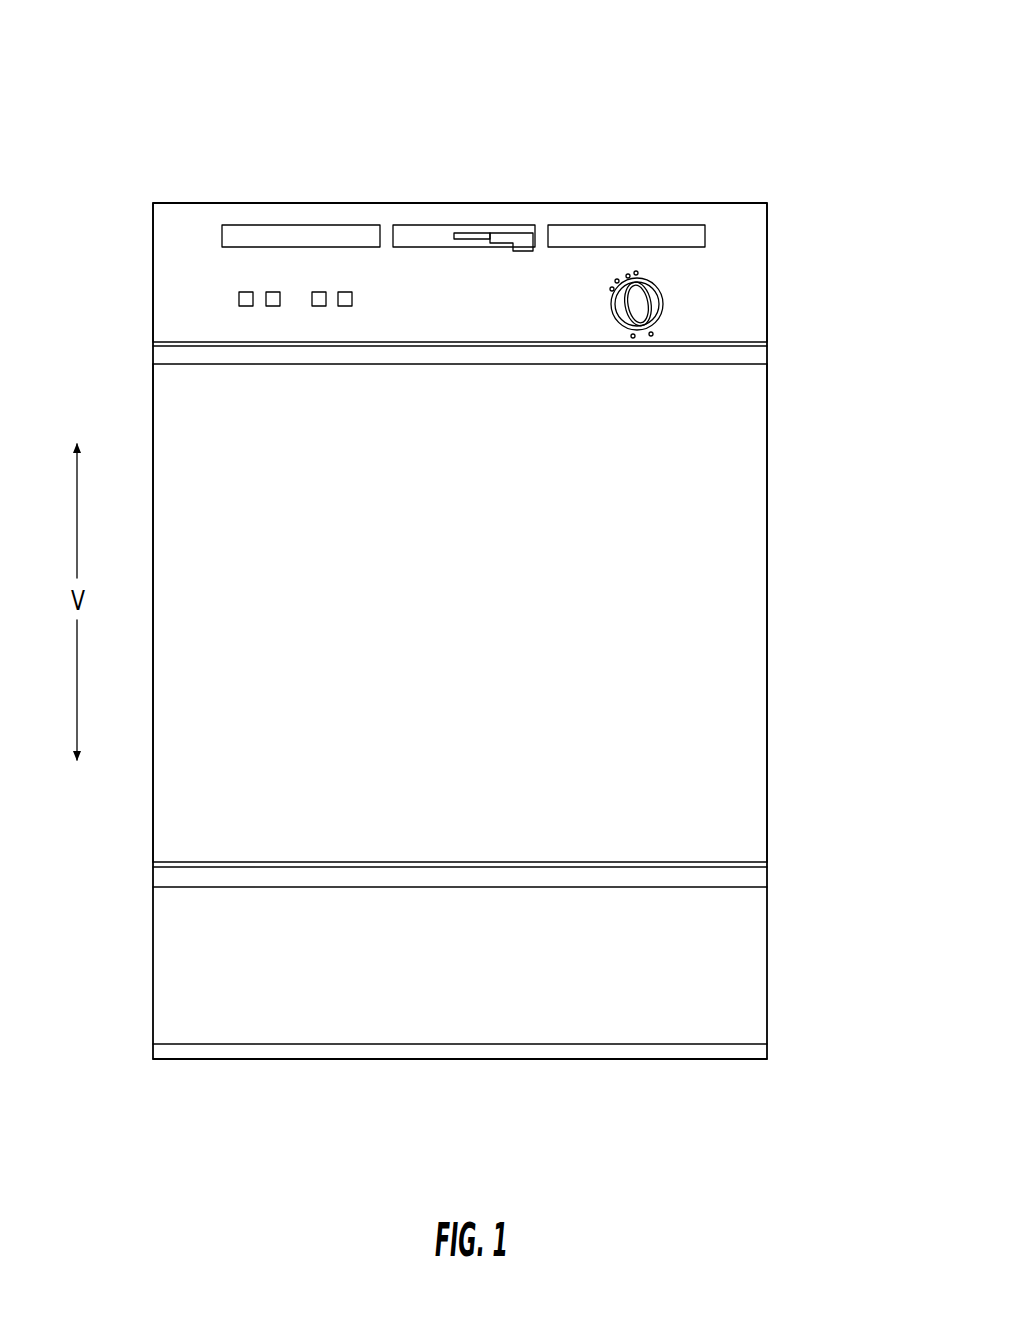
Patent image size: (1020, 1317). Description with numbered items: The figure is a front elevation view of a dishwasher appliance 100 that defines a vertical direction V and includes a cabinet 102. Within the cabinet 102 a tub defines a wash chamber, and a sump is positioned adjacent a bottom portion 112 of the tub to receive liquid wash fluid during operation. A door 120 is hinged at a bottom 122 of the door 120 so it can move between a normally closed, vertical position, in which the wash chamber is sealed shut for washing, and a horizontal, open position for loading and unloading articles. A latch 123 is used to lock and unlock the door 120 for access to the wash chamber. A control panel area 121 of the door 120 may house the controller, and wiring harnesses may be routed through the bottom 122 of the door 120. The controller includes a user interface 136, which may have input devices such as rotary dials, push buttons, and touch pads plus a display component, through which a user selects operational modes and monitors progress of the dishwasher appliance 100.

The dishwasher appliance 100 is at (697, 50).
The cabinet 102 is at (776, 956).
The bottom portion 112 is at (143, 1051).
The door 120 is at (724, 590).
The control panel area 121 is at (742, 228).
The bottom 122 is at (776, 851).
The latch 123 is at (519, 236).
The user interface 136 is at (320, 292).